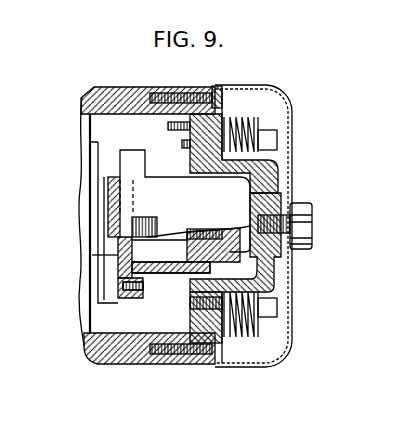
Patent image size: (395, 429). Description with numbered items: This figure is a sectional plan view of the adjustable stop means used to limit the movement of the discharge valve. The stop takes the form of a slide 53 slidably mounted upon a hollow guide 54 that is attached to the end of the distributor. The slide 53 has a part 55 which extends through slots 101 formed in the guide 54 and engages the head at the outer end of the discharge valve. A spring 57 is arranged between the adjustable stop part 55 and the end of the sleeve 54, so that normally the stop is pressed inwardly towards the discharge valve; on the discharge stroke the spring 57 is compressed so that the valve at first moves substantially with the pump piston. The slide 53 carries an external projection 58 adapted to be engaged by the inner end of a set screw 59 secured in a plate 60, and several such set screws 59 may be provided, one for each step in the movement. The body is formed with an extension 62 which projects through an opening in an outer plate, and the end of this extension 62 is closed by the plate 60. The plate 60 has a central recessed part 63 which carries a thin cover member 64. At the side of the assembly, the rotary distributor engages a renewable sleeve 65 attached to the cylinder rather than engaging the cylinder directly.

The slide 53 is at (160, 184).
The hollow guide 54 is at (278, 279).
The part of adjustable stop 55 is at (97, 255).
The spring 57 is at (291, 262).
The external projection 58 is at (92, 222).
The set screw 59 is at (278, 145).
The plate 60 is at (207, 90).
The extension 62 is at (122, 92).
The central recessed part 63 is at (263, 170).
The thin cover member 64 is at (290, 320).
The renewable sleeve 65 is at (79, 135).
The slots 101 is at (163, 244).